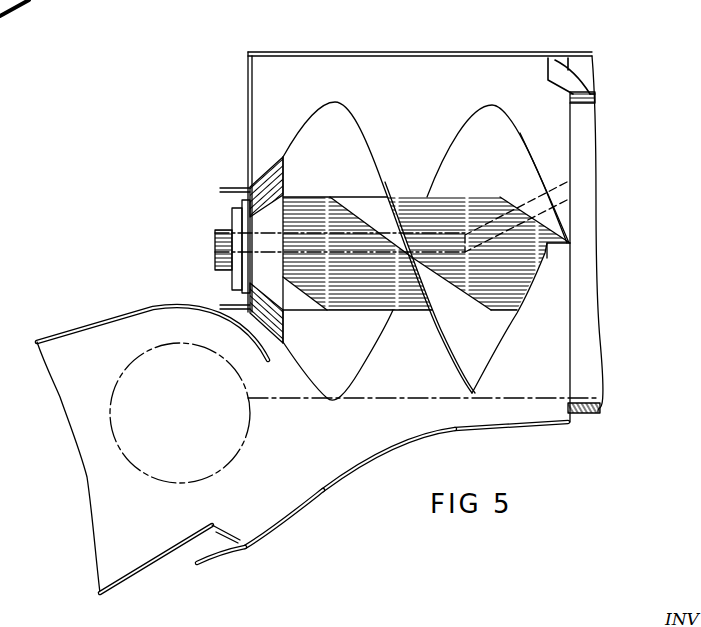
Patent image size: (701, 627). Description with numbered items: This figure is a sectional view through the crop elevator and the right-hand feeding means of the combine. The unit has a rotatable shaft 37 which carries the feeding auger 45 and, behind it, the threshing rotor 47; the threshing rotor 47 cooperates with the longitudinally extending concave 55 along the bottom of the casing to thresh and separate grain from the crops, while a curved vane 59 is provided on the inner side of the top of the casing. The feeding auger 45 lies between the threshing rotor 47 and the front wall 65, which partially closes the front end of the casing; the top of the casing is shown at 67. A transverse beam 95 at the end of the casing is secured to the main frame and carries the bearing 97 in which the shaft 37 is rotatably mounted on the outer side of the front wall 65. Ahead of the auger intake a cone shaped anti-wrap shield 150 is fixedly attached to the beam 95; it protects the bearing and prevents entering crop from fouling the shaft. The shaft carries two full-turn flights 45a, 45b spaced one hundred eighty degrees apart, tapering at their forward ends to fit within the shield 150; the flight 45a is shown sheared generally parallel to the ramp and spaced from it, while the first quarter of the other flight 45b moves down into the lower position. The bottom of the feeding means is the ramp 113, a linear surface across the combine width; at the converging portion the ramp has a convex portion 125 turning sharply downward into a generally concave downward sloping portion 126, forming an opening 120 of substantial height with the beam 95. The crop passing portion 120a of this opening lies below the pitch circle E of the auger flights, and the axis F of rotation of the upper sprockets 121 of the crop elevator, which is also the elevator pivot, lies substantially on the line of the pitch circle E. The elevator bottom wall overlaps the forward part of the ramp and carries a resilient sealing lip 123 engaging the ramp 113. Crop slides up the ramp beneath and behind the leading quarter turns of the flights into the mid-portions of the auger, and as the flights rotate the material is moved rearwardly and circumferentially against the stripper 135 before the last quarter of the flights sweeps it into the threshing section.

The rotatable shaft 37 is at (407, 197).
The feeding auger 45 is at (426, 255).
The auger flight 45a is at (336, 104).
The auger flight 45b is at (335, 392).
The threshing rotor 47 is at (583, 137).
The concave 55 is at (590, 413).
The curved vane 59 is at (563, 80).
The front wall 65 is at (247, 97).
The top wall 67 is at (476, 54).
The transverse beam 95 is at (220, 192).
The bearing 97 is at (235, 242).
The ramp 113 is at (395, 484).
The opening 120 is at (260, 377).
The crop passing portion 120a is at (240, 514).
The upper sprocket 121 is at (117, 385).
The resilient sealing lip 123 is at (240, 548).
The convex portion 125 is at (511, 443).
The downward sloping portion 126 is at (323, 488).
The stripper 135 is at (585, 179).
The anti-wrap shield 150 is at (262, 328).
The pitch circle E is at (279, 400).
The axis F is at (180, 414).